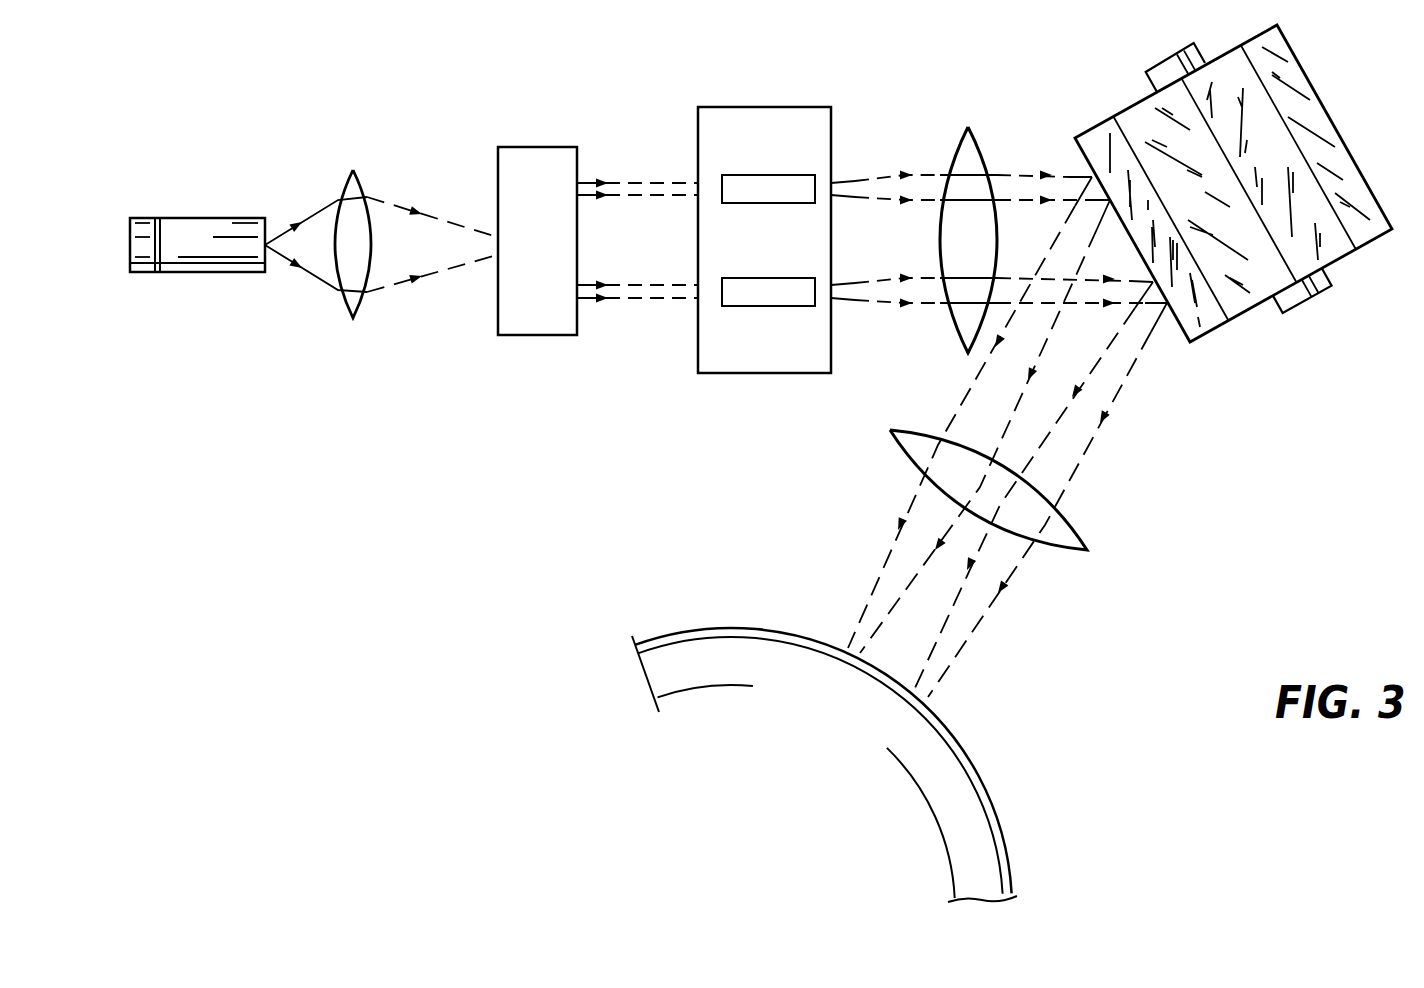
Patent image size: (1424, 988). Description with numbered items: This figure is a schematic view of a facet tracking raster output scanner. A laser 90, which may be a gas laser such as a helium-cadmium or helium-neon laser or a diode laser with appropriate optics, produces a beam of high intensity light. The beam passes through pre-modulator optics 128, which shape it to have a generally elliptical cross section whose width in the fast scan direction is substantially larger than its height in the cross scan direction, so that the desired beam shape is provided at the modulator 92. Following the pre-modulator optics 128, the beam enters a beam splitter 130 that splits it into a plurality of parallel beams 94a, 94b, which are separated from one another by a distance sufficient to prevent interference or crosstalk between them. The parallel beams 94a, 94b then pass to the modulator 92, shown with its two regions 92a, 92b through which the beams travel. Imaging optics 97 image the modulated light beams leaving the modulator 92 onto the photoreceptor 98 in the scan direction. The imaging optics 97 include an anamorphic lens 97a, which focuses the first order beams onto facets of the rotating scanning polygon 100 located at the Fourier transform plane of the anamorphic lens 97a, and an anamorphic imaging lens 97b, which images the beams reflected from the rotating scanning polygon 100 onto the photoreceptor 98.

The laser 90 is at (215, 218).
The pre-modulator optics 128 is at (348, 152).
The beam splitter 130 is at (538, 147).
The parallel beam 94a is at (655, 177).
The parallel beam 94b is at (650, 340).
The modulator 92 is at (790, 239).
The first aperture 92a is at (833, 74).
The second aperture 92b is at (833, 403).
The anamorphic lens 97a is at (1000, 93).
The rotating scanning polygon 100 is at (1127, 60).
The imaging optics 97 is at (1185, 478).
The anamorphic imaging lens 97b is at (1110, 541).
The photoreceptor 98 is at (727, 628).